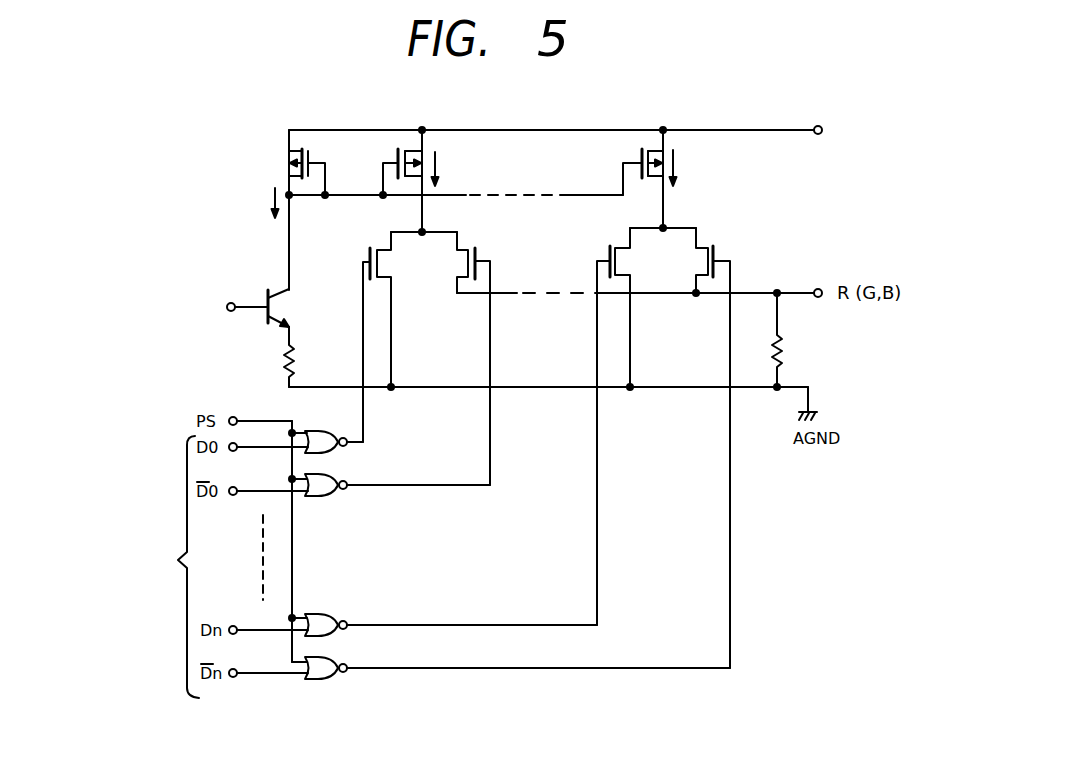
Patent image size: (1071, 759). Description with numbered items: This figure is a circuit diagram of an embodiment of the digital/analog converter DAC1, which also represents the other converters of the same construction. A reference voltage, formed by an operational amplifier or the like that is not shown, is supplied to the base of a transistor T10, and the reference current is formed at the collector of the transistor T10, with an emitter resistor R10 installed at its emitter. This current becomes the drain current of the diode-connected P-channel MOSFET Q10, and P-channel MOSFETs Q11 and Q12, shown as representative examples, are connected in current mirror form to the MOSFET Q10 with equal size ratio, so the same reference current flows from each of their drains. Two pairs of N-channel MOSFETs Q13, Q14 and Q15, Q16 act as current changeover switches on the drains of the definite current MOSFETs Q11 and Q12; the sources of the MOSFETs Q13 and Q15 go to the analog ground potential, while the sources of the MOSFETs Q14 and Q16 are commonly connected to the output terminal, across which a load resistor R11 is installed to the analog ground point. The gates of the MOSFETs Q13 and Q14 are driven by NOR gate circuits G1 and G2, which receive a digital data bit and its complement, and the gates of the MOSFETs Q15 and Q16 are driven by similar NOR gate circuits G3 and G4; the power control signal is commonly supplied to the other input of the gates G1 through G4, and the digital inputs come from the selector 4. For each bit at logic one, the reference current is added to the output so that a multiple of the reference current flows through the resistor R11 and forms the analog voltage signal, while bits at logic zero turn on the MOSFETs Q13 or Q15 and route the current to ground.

The digital/analog converter DAC1 is at (655, 118).
The P-channel MOSFET in diode form Q10 is at (285, 210).
The P-channel MOSFET Q11 is at (408, 181).
The P-channel MOSFET Q12 is at (647, 179).
The N-channel MOSFET Q13 is at (400, 334).
The N-channel MOSFET Q14 is at (476, 356).
The N-channel MOSFET Q15 is at (638, 425).
The N-channel MOSFET Q16 is at (716, 446).
The transistor T10 is at (254, 308).
The emitter resistor R10 is at (310, 357).
The load resistor R11 is at (798, 340).
The NOR gate circuit G1 is at (327, 427).
The NOR gate circuit G2 is at (391, 499).
The NOR gate circuit G3 is at (444, 611).
The NOR gate circuit G4 is at (511, 684).
The selector 4 is at (130, 567).